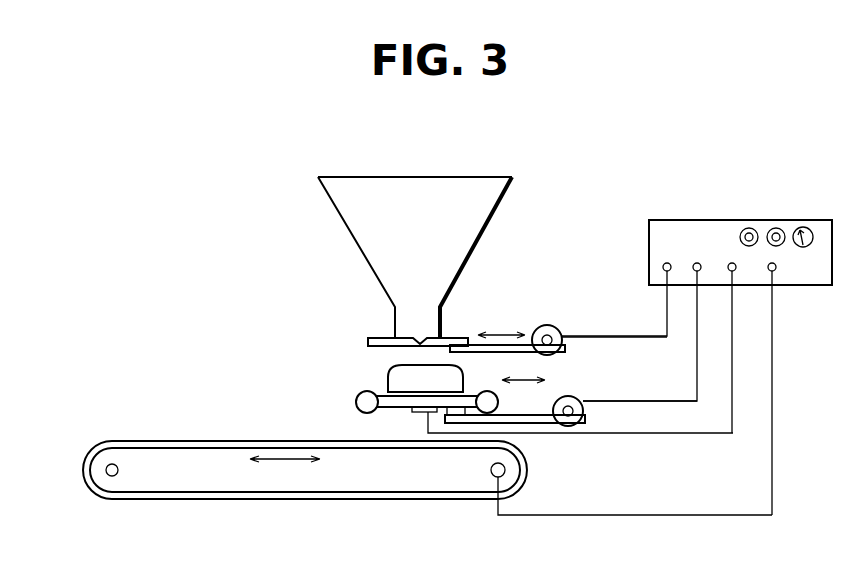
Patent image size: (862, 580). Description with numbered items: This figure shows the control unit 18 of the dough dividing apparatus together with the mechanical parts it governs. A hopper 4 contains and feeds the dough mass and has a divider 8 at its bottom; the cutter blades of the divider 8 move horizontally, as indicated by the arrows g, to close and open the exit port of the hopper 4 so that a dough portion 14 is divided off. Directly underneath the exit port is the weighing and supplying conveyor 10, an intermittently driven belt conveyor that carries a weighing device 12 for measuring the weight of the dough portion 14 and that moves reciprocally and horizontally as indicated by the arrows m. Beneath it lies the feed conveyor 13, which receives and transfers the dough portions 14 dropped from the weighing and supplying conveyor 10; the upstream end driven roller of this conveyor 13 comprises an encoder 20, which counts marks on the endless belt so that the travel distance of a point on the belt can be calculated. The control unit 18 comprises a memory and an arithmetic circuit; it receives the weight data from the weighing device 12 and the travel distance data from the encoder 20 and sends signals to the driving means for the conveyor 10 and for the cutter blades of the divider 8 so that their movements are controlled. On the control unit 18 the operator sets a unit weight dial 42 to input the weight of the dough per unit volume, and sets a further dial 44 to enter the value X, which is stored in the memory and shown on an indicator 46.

The hopper 4 is at (505, 198).
The divider 8 is at (457, 337).
The weighing and supplying conveyor 10 is at (355, 400).
The weighing device 12 is at (412, 412).
The feed conveyor 13 is at (173, 440).
The dough portion 14 is at (390, 380).
The control unit 18 is at (698, 217).
The encoder 20 is at (510, 472).
The unit weight dial 42 is at (748, 228).
The dial 44 is at (778, 228).
The indicator 46 is at (812, 233).